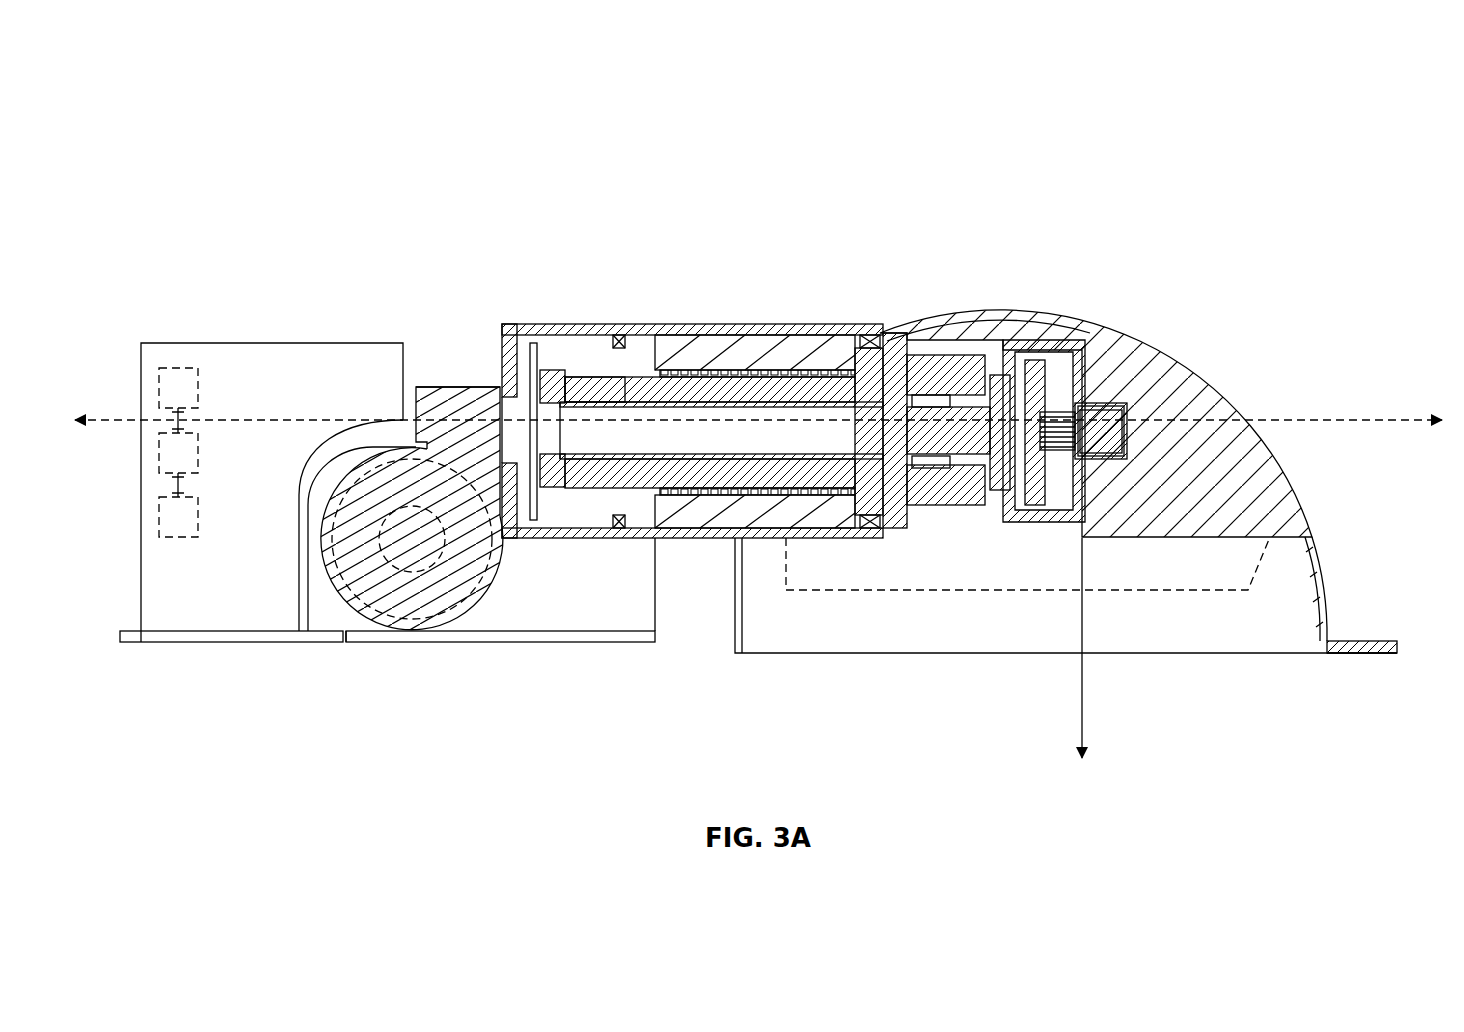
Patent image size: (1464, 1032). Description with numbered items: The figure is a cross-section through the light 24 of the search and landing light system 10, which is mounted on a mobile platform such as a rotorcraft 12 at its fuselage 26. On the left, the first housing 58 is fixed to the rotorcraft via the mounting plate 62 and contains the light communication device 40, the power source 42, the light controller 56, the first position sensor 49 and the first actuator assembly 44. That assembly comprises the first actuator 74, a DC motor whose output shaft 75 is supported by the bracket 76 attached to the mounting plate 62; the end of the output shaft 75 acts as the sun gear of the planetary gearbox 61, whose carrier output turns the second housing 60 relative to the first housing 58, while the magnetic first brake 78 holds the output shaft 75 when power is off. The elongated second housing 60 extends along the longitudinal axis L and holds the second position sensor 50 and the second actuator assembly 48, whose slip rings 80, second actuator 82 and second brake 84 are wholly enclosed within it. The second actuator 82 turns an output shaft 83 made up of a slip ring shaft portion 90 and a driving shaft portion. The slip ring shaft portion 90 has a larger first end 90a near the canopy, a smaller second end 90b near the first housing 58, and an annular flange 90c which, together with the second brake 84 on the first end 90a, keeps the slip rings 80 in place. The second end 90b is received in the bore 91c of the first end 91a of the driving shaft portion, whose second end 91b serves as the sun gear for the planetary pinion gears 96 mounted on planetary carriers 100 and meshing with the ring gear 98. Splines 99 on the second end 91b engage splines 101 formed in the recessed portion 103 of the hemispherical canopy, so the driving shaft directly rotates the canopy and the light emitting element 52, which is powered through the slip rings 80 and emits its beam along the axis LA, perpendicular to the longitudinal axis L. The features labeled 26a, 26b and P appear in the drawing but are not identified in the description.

The search and landing light system 10 is at (1199, 132).
The rotorcraft 12 is at (174, 704).
The light 24 is at (1119, 214).
The fuselage 26 is at (135, 636).
The base foot 26a is at (1338, 641).
The base foot bottom 26b is at (1365, 654).
The light communication device 40 is at (208, 508).
The power source 42 is at (210, 374).
The first actuator assembly 44 is at (418, 381).
The second actuator assembly 48 is at (867, 330).
The first position sensor 49 is at (308, 502).
The second position sensor 50 is at (538, 350).
The light emitting element 52 is at (945, 592).
The light controller 56 is at (208, 446).
The first housing 58 is at (479, 334).
The second housing 60 is at (1176, 337).
The planetary gearbox 61 is at (350, 588).
The mounting plate 62 is at (553, 637).
The first actuator 74 is at (318, 553).
The output shaft 75 is at (480, 602).
The bracket 76 is at (453, 452).
The first brake 78 is at (428, 612).
The slip rings 80 is at (738, 333).
The second actuator 82 is at (895, 380).
The output shaft 83 is at (868, 542).
The second brake 84 is at (619, 528).
The slip ring shaft portion 90 is at (662, 392).
The first end 90a is at (580, 392).
The second end 90b is at (1000, 425).
The flange 90c is at (885, 360).
The first end 91a is at (925, 395).
The second end 91b is at (1010, 400).
The bore 91c is at (944, 462).
The planetary pinion gears 96 is at (995, 455).
The ring gear 98 is at (1055, 352).
The splines 99 is at (1090, 425).
The planetary carriers 100 is at (1042, 470).
The splines 101 is at (1110, 356).
The recessed portion 103 is at (1127, 430).
The longitudinal axis L is at (84, 432).
The axis LA is at (1083, 722).
The pivot P is at (1125, 424).